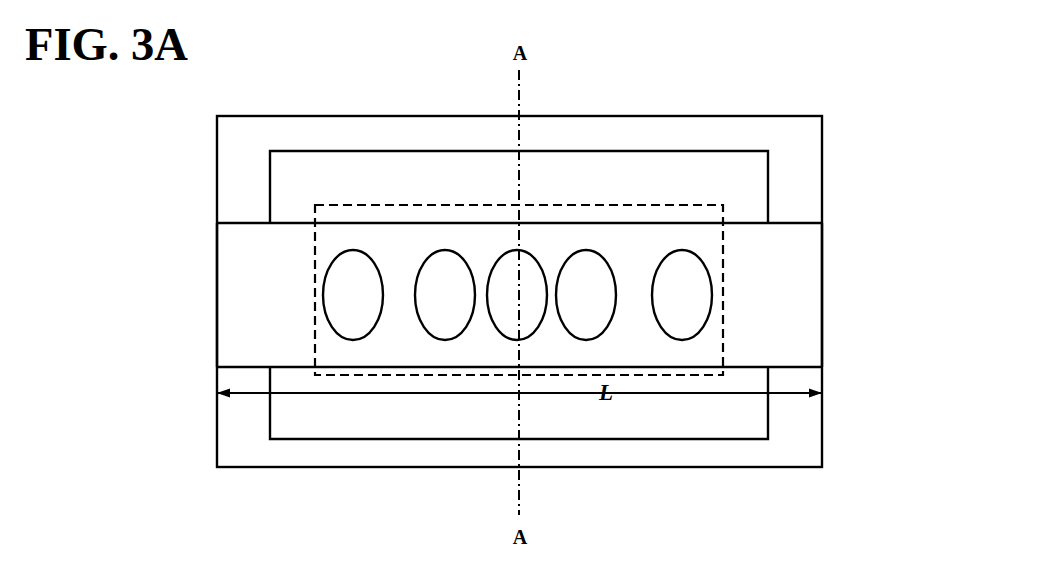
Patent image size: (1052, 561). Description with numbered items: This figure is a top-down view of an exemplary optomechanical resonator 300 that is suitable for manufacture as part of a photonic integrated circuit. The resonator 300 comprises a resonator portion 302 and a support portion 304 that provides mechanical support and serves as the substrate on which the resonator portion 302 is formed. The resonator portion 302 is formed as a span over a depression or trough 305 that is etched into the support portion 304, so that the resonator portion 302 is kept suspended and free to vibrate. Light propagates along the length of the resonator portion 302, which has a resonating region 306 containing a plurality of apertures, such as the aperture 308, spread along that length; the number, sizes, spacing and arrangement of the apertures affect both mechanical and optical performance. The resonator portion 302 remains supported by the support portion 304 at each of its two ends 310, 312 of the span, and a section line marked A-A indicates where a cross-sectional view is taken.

The optomechanical resonator 300 is at (858, 70).
The resonator portion 302 is at (757, 223).
The support portion 304 is at (643, 116).
The trough 305 is at (363, 167).
The resonating region 306 is at (645, 206).
The aperture 308 is at (540, 265).
The end of the span 310 is at (842, 267).
The end of the span 312 is at (175, 268).